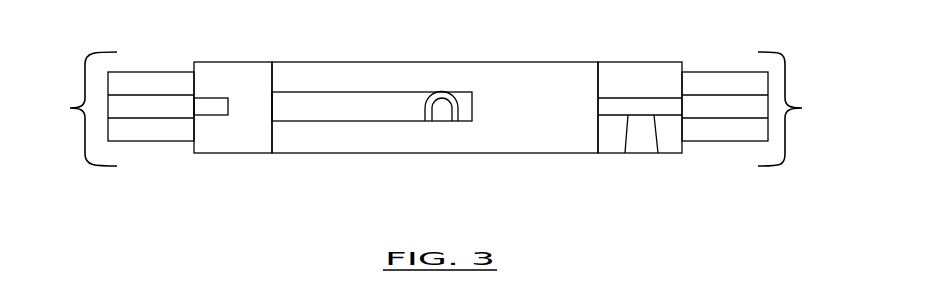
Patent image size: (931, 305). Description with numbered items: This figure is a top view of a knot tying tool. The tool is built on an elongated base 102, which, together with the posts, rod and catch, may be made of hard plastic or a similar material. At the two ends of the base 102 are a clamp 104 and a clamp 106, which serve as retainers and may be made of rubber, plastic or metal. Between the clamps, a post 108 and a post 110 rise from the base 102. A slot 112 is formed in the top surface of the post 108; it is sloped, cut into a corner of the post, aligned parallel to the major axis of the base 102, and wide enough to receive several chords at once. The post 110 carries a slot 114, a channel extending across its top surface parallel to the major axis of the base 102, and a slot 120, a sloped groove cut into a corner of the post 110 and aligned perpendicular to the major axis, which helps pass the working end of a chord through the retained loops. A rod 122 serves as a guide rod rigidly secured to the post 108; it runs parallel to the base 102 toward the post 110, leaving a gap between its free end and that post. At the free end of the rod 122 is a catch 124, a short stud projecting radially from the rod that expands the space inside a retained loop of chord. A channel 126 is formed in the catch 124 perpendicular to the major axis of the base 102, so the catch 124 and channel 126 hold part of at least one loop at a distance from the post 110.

The base 102 is at (518, 61).
The clamp 104 is at (113, 109).
The clamp 106 is at (764, 109).
The post 108 is at (232, 61).
The post 110 is at (643, 61).
The slot 112 is at (215, 115).
The slot 114 is at (667, 110).
The slot 120 is at (643, 153).
The rod 122 is at (377, 92).
The catch 124 is at (472, 108).
The channel 126 is at (442, 110).